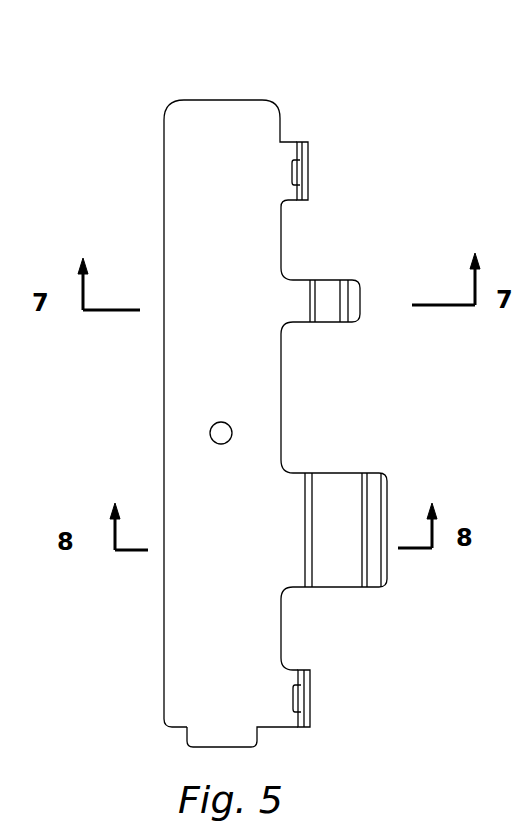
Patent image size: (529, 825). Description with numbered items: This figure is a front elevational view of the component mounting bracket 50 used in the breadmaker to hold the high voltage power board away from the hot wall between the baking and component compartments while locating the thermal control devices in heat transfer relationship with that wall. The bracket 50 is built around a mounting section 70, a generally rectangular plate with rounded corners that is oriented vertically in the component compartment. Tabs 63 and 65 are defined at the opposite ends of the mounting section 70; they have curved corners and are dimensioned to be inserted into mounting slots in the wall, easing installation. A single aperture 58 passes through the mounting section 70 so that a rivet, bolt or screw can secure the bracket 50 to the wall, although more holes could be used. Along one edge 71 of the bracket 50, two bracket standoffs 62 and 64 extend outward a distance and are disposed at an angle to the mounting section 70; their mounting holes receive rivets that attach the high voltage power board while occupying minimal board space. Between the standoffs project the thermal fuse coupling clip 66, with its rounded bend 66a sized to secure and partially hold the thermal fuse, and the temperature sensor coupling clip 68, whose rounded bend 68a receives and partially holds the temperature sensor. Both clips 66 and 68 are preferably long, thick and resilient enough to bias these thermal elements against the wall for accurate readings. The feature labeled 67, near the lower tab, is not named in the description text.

The component mounting bracket 50 is at (158, 583).
The aperture 58 is at (221, 422).
The bracket standoff 62 is at (307, 140).
The tab 63 is at (268, 104).
The bracket standoff 64 is at (311, 697).
The tab 65 is at (215, 750).
The thermal fuse coupling clip 66 is at (362, 295).
The rounded bend 66a is at (326, 320).
The bottom step 67 is at (197, 733).
The temperature sensor coupling clip 68 is at (390, 498).
The rounded bend 68a is at (340, 573).
The mounting section 70 is at (192, 120).
The edge 71 is at (285, 246).